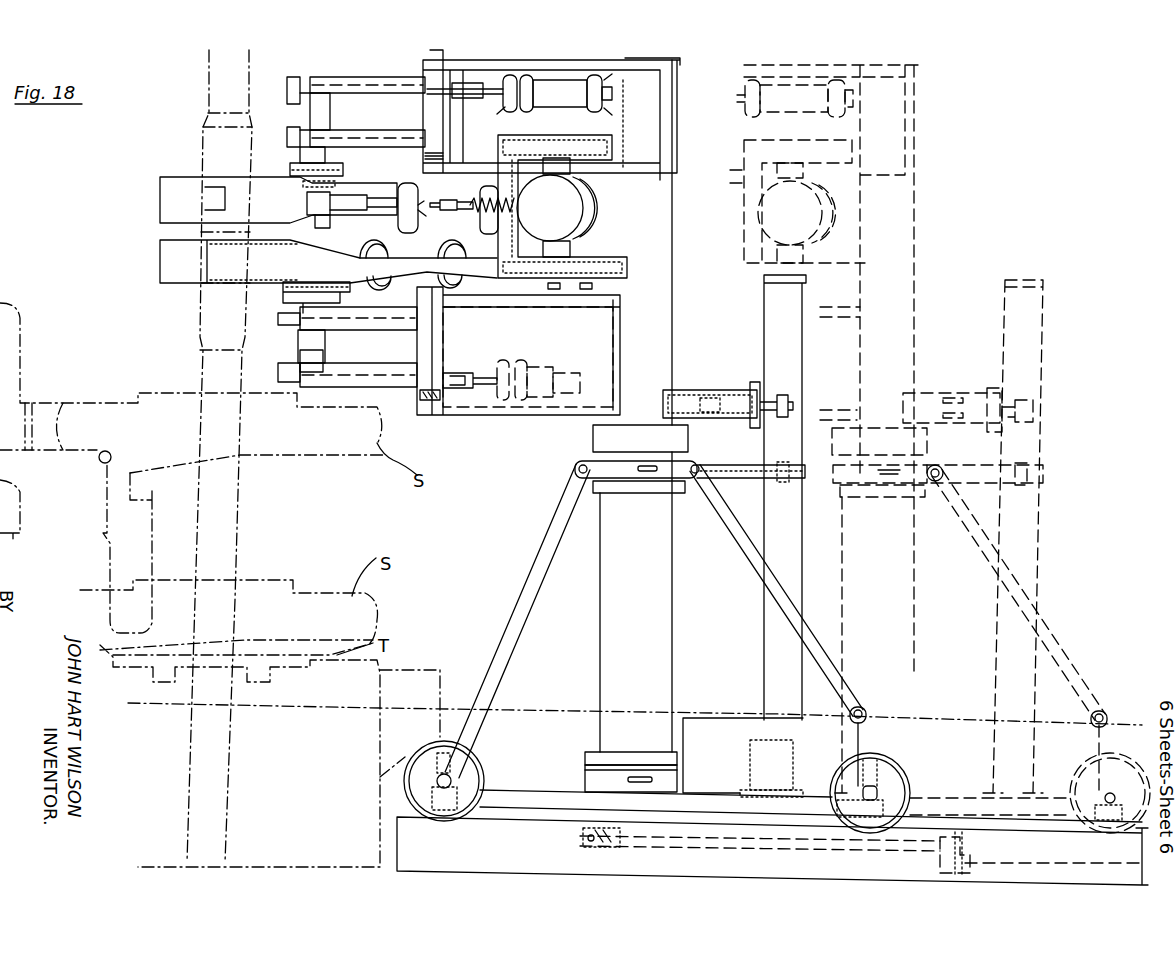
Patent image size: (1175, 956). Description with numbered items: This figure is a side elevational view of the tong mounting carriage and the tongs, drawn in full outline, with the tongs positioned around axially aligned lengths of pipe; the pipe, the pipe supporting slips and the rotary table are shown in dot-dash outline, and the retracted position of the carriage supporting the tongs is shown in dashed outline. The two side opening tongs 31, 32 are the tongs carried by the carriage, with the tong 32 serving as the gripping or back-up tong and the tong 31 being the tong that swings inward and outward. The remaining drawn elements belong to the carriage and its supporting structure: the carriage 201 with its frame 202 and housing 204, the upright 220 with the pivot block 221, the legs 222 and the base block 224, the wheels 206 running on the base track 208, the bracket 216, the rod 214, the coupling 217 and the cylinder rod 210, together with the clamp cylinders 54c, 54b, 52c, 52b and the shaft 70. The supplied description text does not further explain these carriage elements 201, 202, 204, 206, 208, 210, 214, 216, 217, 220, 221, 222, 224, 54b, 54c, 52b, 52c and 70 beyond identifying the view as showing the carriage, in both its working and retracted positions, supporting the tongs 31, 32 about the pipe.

The side opening tong 31 is at (152, 192).
The side opening tong 32 is at (152, 240).
The upper clamp cylinder 54c is at (330, 75).
The frame 202 is at (425, 62).
The hydraulic cylinder 54b is at (577, 136).
The upright column 220 is at (670, 338).
The lower clamp cylinder 52c is at (298, 378).
The piston assembly 52b is at (569, 358).
The housing 204 is at (547, 415).
The pivot block 221 is at (617, 458).
The shaft 70 is at (232, 541).
The support leg 222 is at (660, 567).
The base block 224 is at (741, 728).
The wheel 206 is at (468, 760).
The carriage rail 201 is at (545, 752).
The bracket 216 is at (587, 815).
The base track 208 is at (755, 874).
The rod 214 is at (841, 845).
The coupling 217 is at (953, 866).
The cylinder rod 210 is at (1020, 858).